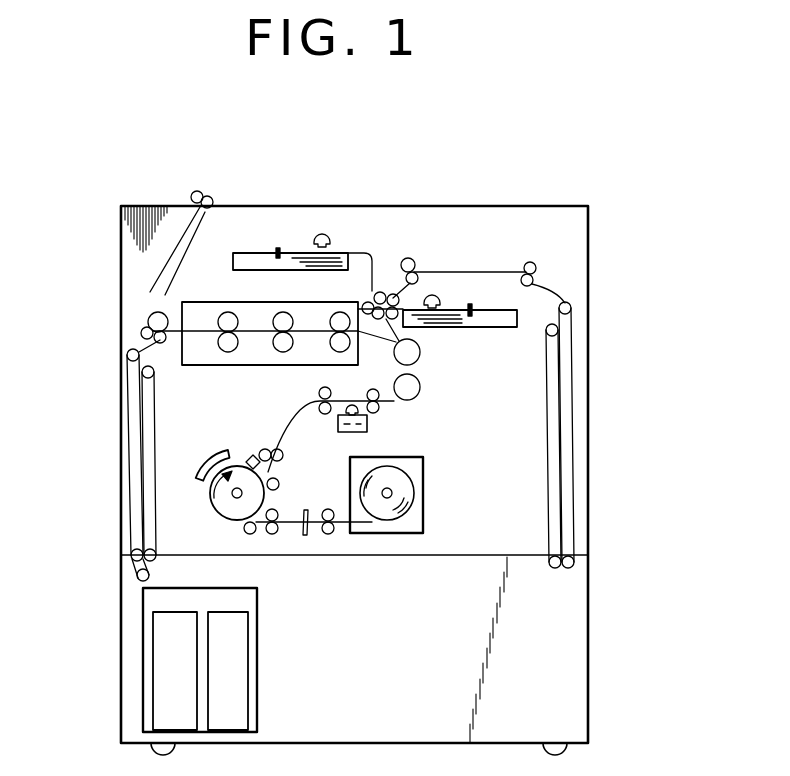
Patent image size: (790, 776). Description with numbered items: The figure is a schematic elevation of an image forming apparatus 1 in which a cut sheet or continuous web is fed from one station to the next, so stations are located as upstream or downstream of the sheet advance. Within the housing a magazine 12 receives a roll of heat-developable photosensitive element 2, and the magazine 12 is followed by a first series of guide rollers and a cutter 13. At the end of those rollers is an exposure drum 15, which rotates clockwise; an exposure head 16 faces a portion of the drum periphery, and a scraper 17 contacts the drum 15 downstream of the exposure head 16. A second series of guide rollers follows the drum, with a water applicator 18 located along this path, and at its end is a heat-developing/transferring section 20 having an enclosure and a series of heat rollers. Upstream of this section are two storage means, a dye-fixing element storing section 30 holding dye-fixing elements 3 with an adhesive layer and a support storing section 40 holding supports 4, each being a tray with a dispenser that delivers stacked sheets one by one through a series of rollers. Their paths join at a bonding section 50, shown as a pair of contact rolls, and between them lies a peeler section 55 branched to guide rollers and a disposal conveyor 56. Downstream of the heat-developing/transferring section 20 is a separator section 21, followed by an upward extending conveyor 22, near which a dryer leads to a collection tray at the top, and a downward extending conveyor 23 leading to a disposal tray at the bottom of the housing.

The image forming apparatus 1 is at (318, 177).
The heat-developable photosensitive element 2 is at (387, 520).
The dye-fixing element 3 is at (470, 304).
The support 4 is at (341, 257).
The magazine 12 is at (417, 518).
The cutter 13 is at (303, 540).
The exposure drum 15 is at (210, 492).
The exposure head 16 is at (197, 465).
The scraper 17 is at (252, 456).
The water applicator 18 is at (368, 425).
The heat-developing/transferring section 20 is at (207, 300).
The separator section 21 is at (141, 333).
The upward extending conveyor 22 is at (153, 603).
The downward extending conveyor 23 is at (178, 238).
The dye-fixing element storing section 30 is at (462, 292).
The support storing section 40 is at (337, 223).
The bonding section 50 is at (418, 352).
The peeler section 55 is at (390, 291).
The disposal conveyor 56 is at (573, 435).